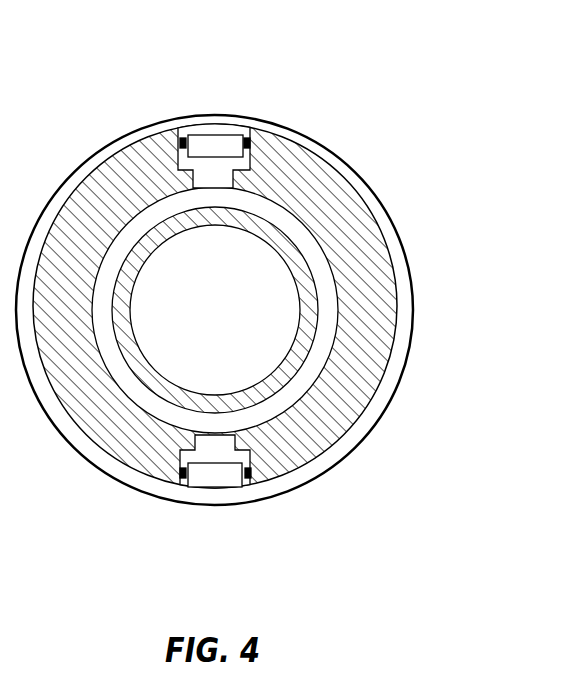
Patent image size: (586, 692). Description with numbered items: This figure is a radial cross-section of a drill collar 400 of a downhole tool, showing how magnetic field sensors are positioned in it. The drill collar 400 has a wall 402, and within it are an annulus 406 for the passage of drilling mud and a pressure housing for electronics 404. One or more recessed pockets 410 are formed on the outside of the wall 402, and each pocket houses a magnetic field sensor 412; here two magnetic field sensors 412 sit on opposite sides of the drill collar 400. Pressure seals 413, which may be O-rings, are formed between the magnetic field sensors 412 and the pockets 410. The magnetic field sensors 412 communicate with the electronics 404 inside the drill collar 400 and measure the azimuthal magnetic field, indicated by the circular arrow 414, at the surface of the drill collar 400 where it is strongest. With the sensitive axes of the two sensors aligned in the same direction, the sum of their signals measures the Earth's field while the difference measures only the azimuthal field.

The drill collar 400 is at (317, 165).
The wall 402 is at (360, 230).
The pressure housing for electronics 404 is at (278, 317).
The annulus 406 is at (327, 292).
The recessed pockets 410 is at (252, 167).
The magnetic field sensors 412 is at (215, 142).
The pressure seals 413 is at (248, 141).
The circular arrow 414 is at (343, 457).